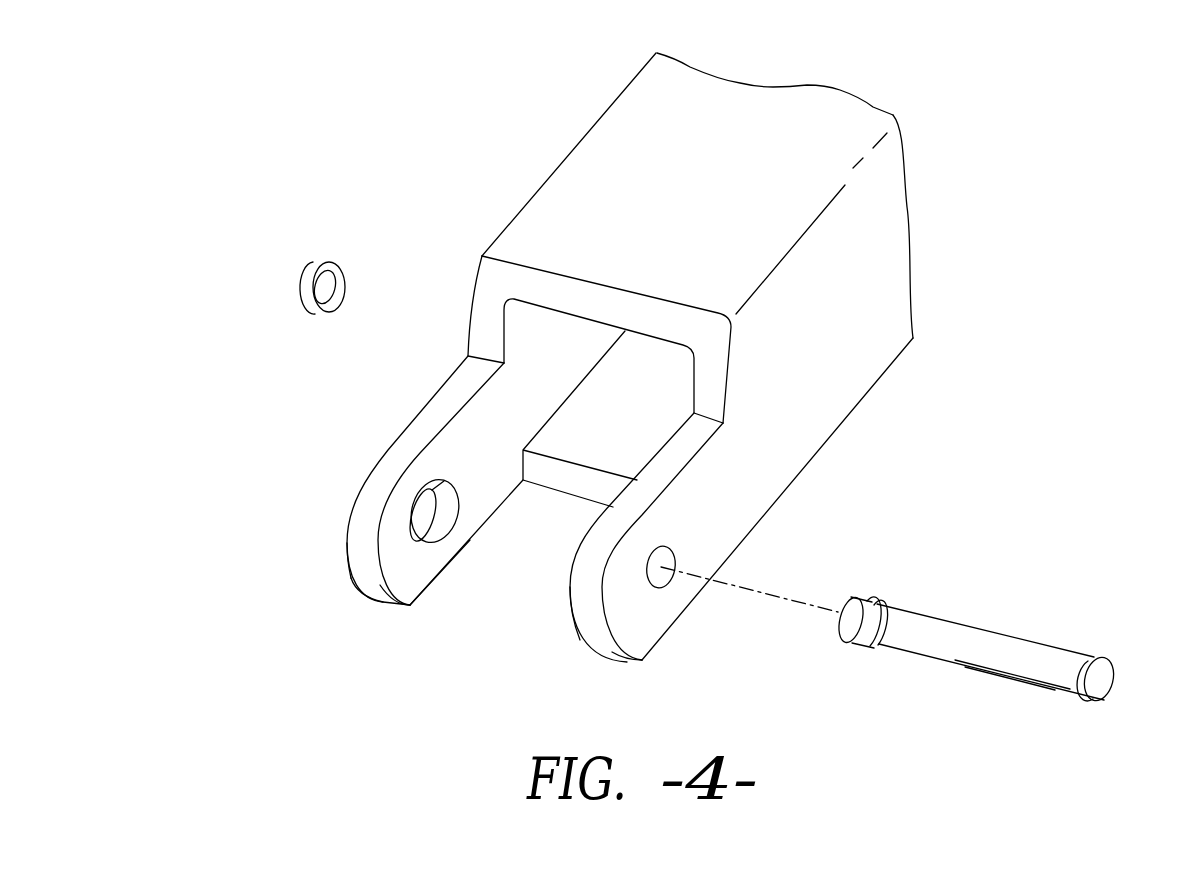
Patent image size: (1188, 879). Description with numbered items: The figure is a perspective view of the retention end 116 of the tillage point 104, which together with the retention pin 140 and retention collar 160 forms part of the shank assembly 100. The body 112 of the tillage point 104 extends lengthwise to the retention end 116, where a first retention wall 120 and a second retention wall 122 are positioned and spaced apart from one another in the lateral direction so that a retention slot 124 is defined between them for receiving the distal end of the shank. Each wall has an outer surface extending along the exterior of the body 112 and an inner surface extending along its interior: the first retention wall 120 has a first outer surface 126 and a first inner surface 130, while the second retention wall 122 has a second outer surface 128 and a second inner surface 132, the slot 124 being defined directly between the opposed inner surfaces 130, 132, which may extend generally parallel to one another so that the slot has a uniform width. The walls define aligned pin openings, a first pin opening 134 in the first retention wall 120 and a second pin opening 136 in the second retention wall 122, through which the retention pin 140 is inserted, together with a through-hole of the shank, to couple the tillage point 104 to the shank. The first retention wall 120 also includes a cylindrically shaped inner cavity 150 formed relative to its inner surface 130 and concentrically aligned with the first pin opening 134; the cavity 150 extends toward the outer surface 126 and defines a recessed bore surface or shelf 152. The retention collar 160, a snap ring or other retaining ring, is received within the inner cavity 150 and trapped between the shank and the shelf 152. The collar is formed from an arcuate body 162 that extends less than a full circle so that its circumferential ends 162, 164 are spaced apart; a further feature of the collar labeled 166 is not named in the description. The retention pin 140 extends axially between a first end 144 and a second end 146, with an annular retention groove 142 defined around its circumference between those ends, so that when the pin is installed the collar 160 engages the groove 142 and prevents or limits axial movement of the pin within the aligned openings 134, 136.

The shank assembly 100 is at (387, 118).
The tillage point 104 is at (553, 120).
The body 112 is at (795, 118).
The retention end 116 is at (330, 547).
The first retention wall 120 is at (376, 455).
The second retention wall 122 is at (658, 472).
The retention slot 124 is at (533, 610).
The first outer surface 126 is at (343, 503).
The second outer surface 128 is at (640, 630).
The first inner surface 130 is at (407, 575).
The second inner surface 132 is at (572, 615).
The first pin opening 134 is at (425, 510).
The second pin opening 136 is at (670, 573).
The retention pin 140 is at (1007, 607).
The annular retention groove 142 is at (870, 595).
The first end 144 is at (1120, 678).
The second end 146 is at (838, 623).
The inner cavity 150 is at (453, 487).
The bore surface or shelf 152 is at (428, 516).
The retention collar 160 is at (278, 305).
The arcuate body 162 is at (322, 313).
The circumferential end 164 is at (315, 263).
The clip upper end 166 is at (330, 263).